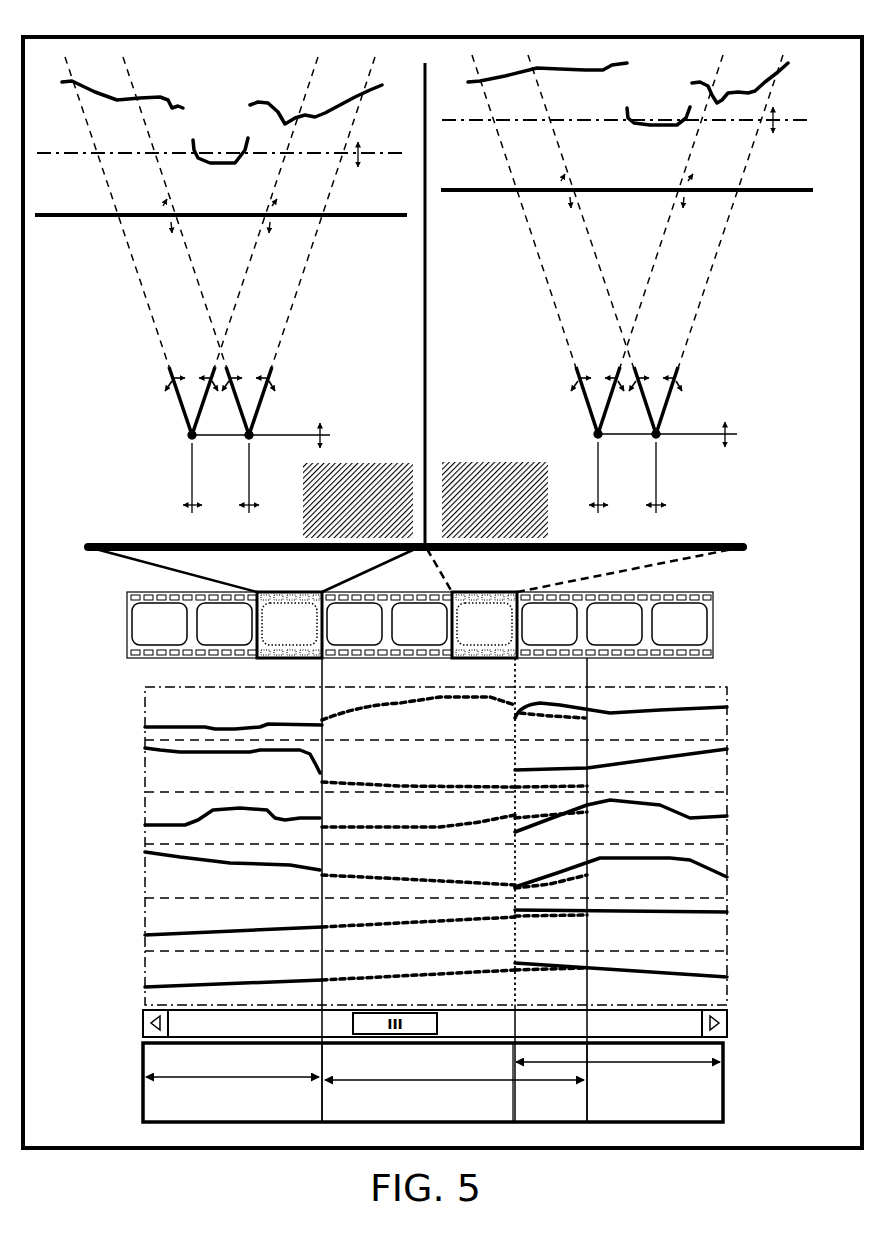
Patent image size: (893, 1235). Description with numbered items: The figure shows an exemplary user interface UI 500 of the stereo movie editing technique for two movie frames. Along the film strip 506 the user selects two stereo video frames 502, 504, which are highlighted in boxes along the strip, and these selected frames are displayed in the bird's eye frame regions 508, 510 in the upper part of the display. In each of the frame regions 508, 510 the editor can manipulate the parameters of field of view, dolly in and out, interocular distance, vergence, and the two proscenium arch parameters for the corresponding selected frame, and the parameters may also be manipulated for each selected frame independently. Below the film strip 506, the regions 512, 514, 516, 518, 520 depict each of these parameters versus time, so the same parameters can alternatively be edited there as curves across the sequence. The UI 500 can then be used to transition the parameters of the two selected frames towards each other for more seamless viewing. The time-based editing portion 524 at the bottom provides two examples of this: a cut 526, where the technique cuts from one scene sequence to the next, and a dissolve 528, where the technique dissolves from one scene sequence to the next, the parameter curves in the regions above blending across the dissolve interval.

The UI 500 is at (228, 33).
The selected stereo video frame 502 is at (267, 591).
The selected stereo video frame 504 is at (492, 591).
The film strip 506 is at (453, 605).
The frame region 508 is at (131, 314).
The frame region 510 is at (723, 293).
The region depicting parameter versus time 512 is at (106, 724).
The region depicting parameter versus time 514 is at (103, 769).
The region depicting parameter versus time 516 is at (103, 818).
The region depicting parameter versus time 518 is at (104, 873).
The region depicting parameter versus time 520 is at (104, 920).
The time-based editing examples 524 is at (729, 1102).
The cut 526 is at (290, 1165).
The dissolve 528 is at (629, 1152).